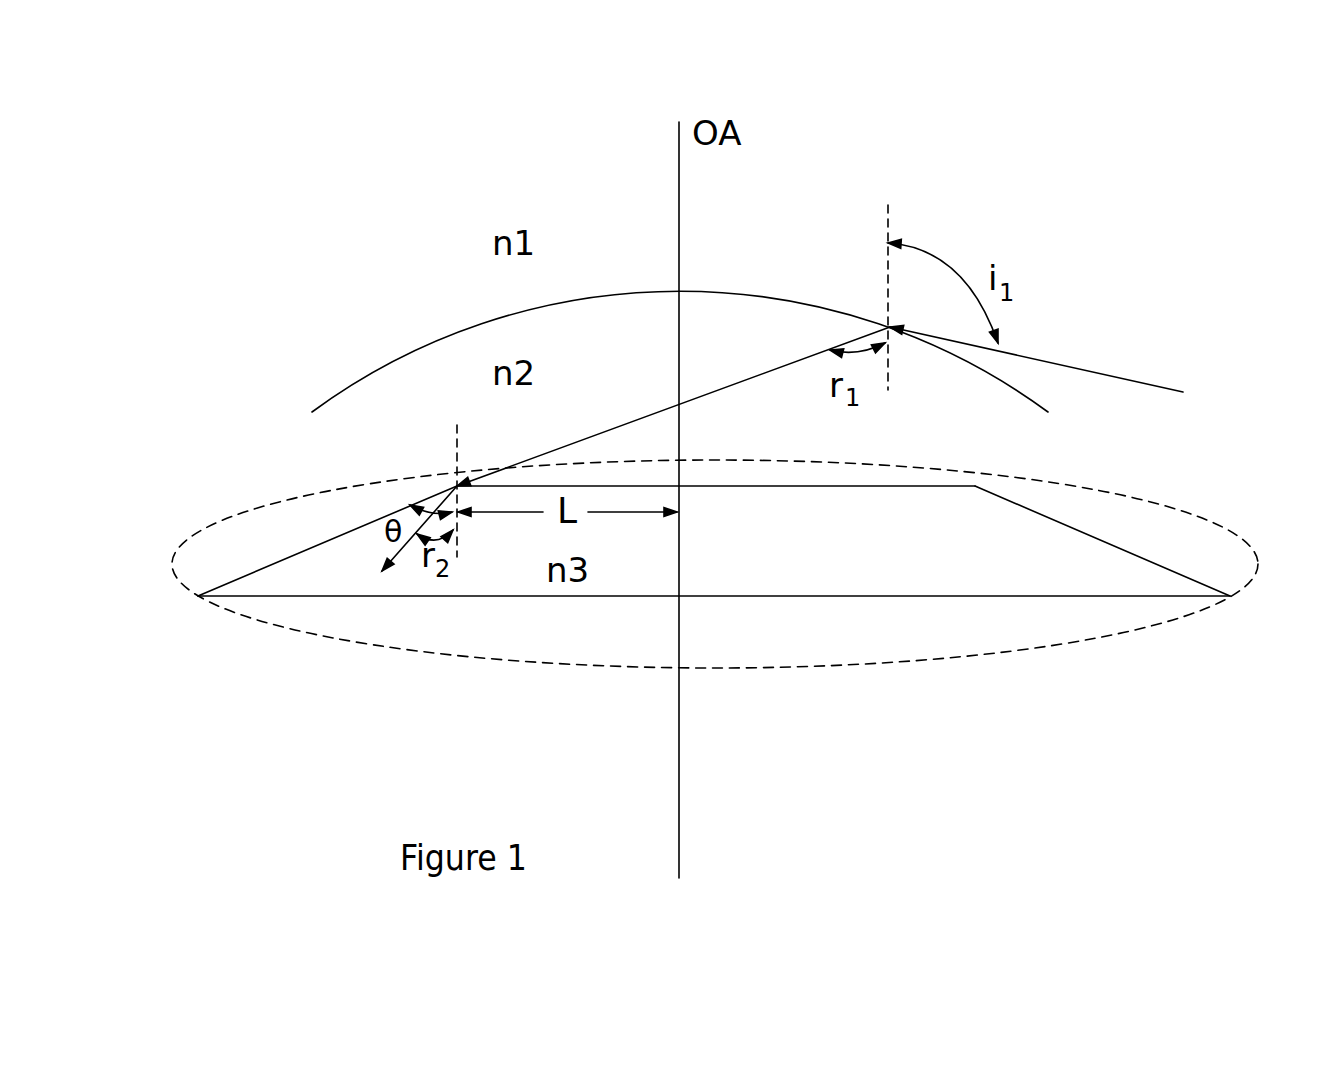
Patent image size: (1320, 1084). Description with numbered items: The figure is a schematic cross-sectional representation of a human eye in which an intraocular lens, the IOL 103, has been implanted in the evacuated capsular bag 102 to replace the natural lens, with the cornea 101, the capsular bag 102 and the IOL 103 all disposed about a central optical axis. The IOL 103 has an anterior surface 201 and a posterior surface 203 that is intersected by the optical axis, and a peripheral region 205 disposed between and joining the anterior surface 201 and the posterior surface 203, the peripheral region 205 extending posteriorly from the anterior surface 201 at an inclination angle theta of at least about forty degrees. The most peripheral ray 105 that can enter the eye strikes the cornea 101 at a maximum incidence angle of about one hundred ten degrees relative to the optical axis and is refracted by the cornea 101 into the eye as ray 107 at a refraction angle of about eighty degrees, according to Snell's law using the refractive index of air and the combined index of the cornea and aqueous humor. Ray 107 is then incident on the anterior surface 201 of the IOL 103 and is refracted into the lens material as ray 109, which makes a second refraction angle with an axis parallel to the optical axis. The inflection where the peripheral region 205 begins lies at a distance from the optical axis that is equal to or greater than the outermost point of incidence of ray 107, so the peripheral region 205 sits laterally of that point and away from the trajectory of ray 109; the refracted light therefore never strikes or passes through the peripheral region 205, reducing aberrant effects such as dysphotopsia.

The cornea 101 is at (443, 340).
The capsular bag 102 is at (1160, 510).
The IOL 103 is at (686, 504).
The ray 105 is at (1083, 365).
The refracted ray of light 107 is at (655, 413).
The ray 109 is at (383, 568).
The anterior surface 201 is at (862, 488).
The posterior surface 203 is at (900, 595).
The peripheral region 205 is at (240, 572).